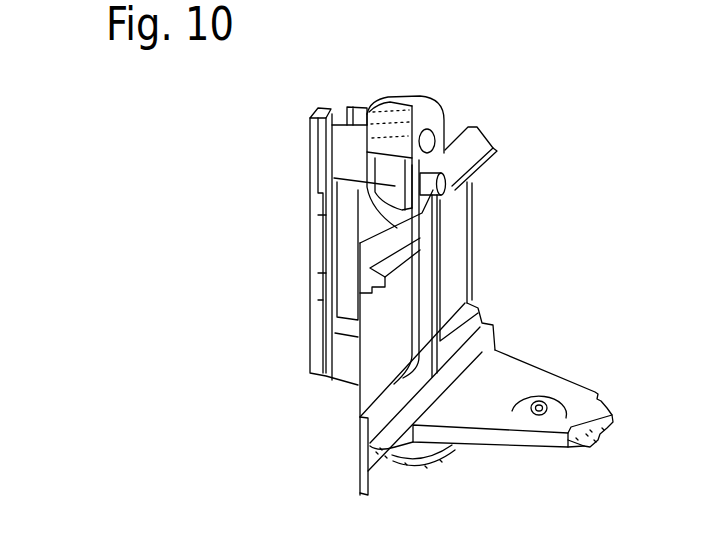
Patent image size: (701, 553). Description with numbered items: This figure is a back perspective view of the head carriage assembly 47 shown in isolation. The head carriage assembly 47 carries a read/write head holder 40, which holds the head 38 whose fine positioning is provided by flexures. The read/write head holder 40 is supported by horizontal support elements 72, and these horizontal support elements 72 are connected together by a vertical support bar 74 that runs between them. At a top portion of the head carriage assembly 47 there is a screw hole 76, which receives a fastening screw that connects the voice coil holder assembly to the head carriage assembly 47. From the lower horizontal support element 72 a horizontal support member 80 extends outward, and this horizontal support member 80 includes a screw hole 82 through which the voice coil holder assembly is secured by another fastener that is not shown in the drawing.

The head carriage assembly 47 is at (462, 77).
The head 38 is at (310, 169).
The read/write head holder 40 is at (340, 144).
The screw hole 76 is at (445, 110).
The horizontal support elements 72 is at (493, 147).
The vertical support bar 74 is at (430, 248).
The horizontal support member 80 is at (517, 365).
The screw hole 82 is at (550, 394).